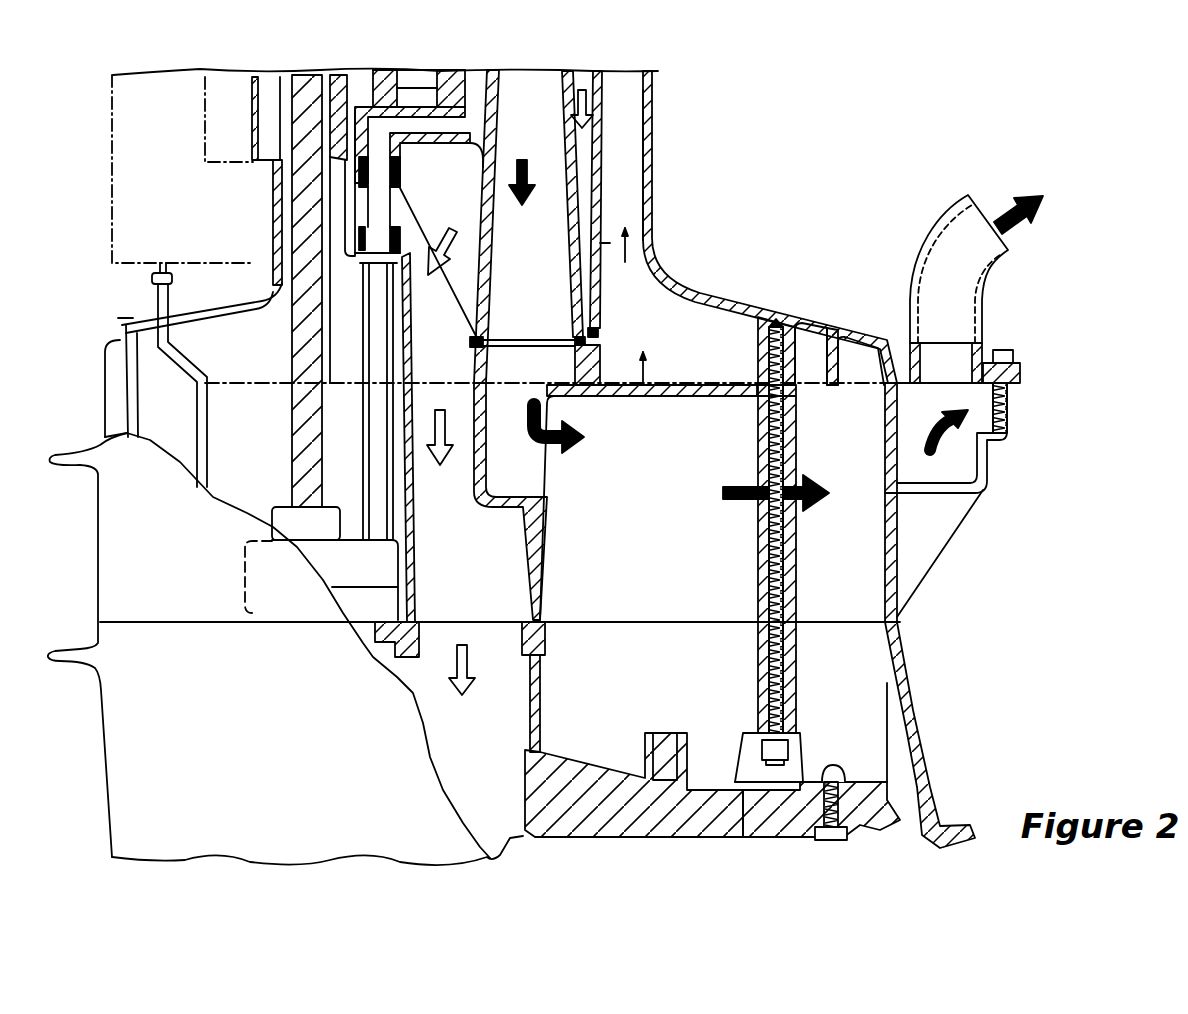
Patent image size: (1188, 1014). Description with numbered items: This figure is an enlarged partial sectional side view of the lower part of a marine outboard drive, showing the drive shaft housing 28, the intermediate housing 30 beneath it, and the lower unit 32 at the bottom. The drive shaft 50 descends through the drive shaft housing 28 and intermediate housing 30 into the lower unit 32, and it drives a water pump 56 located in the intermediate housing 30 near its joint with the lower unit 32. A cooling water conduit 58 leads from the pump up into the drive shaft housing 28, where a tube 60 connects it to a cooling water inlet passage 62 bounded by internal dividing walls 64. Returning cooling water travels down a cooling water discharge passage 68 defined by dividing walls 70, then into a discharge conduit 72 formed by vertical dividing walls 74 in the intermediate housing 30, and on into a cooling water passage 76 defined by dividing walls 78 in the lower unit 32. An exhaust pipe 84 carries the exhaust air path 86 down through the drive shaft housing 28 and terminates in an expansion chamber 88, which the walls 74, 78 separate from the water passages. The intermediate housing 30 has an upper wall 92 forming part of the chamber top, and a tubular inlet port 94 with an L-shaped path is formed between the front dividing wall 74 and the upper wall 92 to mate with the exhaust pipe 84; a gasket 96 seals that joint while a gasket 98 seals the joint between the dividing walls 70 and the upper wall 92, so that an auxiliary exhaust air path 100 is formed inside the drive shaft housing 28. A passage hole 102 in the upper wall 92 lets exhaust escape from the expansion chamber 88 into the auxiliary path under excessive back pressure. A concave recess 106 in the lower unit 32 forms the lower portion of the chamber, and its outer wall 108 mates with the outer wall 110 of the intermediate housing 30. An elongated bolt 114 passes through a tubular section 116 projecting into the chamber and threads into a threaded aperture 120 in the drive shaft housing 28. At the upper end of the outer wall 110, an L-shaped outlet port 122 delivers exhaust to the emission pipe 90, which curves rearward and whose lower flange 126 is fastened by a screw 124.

The drive shaft housing 28 is at (700, 287).
The intermediate housing 30 is at (957, 530).
The lower unit 32 is at (907, 665).
The drive shaft 50 is at (300, 328).
The water pump 56 is at (330, 568).
The cooling water conduit 58 is at (370, 450).
The tube 60 is at (380, 207).
The cooling water inlet passage 62 is at (453, 125).
The internal dividing walls 64 is at (455, 75).
The cooling water discharge passage 68 is at (590, 92).
The dividing walls 70 is at (605, 148).
The discharge conduit 72 is at (497, 552).
The dividing walls 74 is at (537, 560).
The cooling water passage 76 is at (472, 760).
The dividing walls 78 is at (407, 660).
The exhaust pipe 84 is at (546, 82).
The exhaust air path 86 is at (600, 243).
The expansion chamber 88 is at (670, 564).
The emission pipe 90 is at (985, 282).
The upper wall 92 is at (690, 397).
The inlet port 94 is at (535, 472).
The gasket 96 is at (483, 327).
The gasket 98 is at (600, 333).
The auxiliary exhaust air path 100 is at (737, 317).
The passage hole 102 is at (622, 403).
The concave recess 106 is at (625, 757).
The outer wall 108 is at (893, 625).
The outer wall 110 is at (890, 578).
The bolt 114 is at (780, 548).
The tubular section 116 is at (793, 693).
The threaded aperture 120 is at (810, 320).
The outlet port 122 is at (975, 468).
The screw 124 is at (1003, 352).
The lower flange 126 is at (1020, 372).